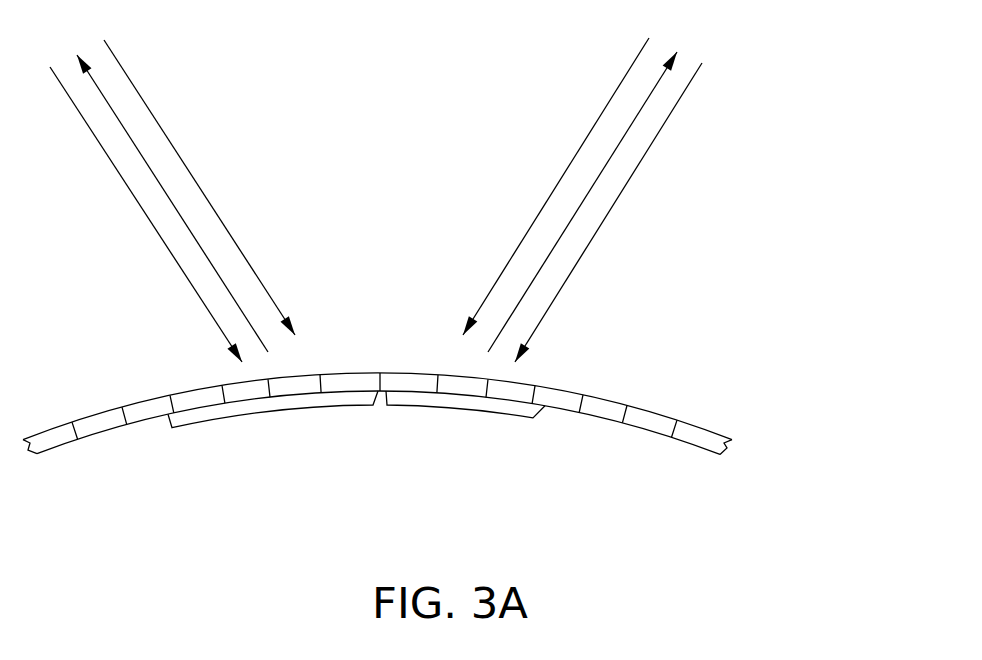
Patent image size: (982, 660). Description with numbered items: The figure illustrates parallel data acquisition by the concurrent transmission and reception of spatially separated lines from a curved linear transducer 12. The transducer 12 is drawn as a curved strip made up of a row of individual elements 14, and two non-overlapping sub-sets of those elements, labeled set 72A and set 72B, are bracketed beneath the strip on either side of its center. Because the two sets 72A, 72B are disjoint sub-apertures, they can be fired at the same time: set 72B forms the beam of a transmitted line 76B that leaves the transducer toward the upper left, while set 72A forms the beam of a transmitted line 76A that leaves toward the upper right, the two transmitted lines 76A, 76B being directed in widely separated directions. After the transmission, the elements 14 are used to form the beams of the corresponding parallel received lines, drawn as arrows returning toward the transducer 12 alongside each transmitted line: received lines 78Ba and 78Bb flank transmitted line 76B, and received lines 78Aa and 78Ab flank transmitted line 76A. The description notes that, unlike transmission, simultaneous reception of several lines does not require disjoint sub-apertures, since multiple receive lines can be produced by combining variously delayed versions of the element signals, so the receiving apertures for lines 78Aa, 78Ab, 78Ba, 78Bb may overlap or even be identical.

The transducer 12 is at (465, 457).
The elements 14 is at (415, 446).
The set of elements A 72A is at (483, 411).
The set of elements B 72B is at (277, 411).
The transmitted line 76A is at (573, 200).
The transmitted line 76B is at (182, 201).
The received line 78Aa is at (542, 208).
The received line 78Ab is at (604, 222).
The received line 78Ba is at (155, 227).
The received line 78Bb is at (216, 209).